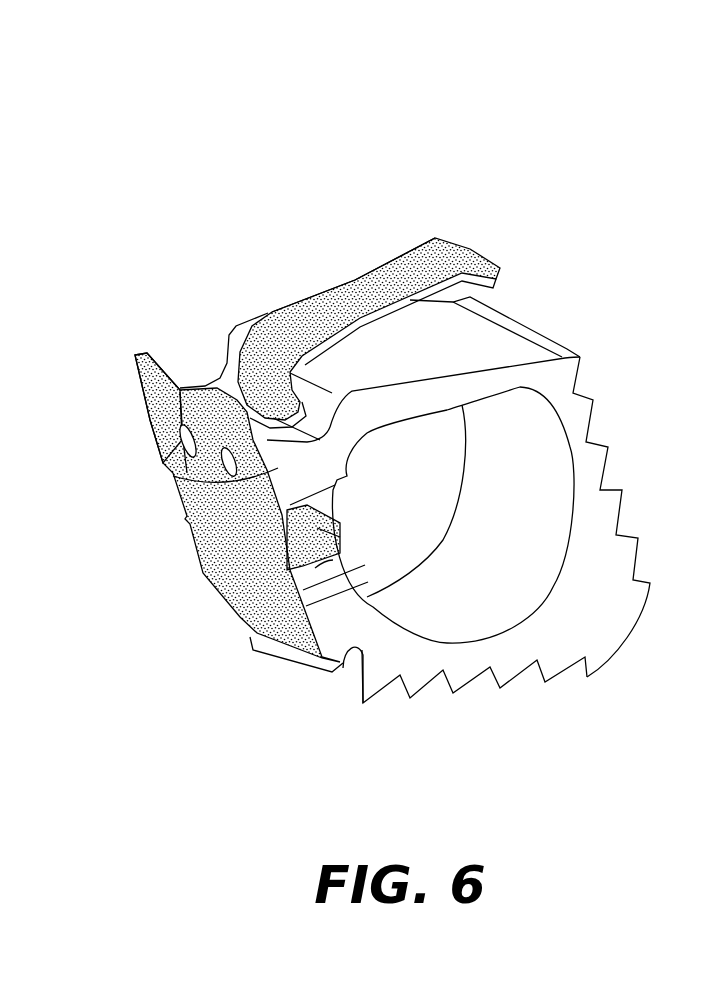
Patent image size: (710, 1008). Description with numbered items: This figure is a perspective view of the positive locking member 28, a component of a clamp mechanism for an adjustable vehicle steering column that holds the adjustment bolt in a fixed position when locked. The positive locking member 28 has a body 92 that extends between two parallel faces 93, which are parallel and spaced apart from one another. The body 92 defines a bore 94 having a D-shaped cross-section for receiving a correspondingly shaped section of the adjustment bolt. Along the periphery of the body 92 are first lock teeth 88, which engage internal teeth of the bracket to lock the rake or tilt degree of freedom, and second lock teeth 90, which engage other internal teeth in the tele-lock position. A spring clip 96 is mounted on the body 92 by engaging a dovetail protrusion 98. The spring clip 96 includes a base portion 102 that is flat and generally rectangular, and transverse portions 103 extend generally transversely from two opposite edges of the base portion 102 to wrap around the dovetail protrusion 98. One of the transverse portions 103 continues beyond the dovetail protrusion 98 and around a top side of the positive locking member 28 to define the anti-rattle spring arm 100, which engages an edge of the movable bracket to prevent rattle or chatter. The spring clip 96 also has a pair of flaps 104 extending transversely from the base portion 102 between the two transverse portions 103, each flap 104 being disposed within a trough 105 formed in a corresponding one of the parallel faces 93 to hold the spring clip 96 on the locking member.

The positive locking member 28 is at (231, 210).
The first lock teeth 88 is at (606, 482).
The second lock teeth 90 is at (503, 680).
The body 92 is at (492, 333).
The parallel faces 93 is at (547, 370).
The bore 94 is at (530, 485).
The spring clip 96 is at (318, 295).
The dovetail protrusion 98 is at (283, 462).
The anti-rattle spring arm 100 is at (382, 282).
The base portion 102 is at (180, 440).
The transverse portions 103 is at (240, 378).
The flaps 104 is at (337, 523).
The trough 105 is at (343, 560).